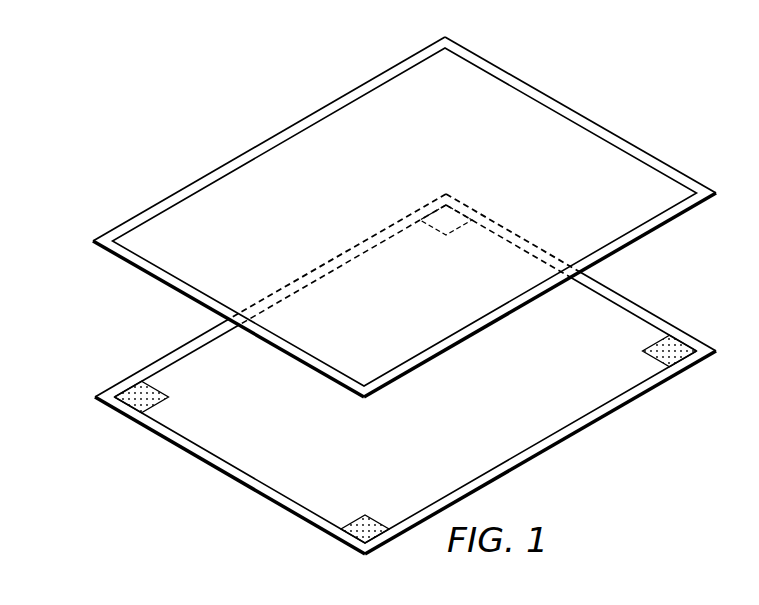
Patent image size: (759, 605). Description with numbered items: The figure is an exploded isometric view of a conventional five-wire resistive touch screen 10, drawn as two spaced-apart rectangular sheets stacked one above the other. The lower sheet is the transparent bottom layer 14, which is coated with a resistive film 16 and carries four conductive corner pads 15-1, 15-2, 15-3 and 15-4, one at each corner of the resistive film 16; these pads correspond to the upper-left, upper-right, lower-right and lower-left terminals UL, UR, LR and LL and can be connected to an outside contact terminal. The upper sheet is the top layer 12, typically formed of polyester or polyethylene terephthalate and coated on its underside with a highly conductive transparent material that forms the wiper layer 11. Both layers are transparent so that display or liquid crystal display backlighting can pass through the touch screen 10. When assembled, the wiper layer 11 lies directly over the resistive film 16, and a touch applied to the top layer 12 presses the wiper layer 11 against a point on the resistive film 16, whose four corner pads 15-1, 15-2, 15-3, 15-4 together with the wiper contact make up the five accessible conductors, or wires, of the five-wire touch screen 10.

The 5-wire resistive touch screen 10 is at (388, 315).
The wiper layer 11 is at (595, 148).
The top layer 12 is at (404, 215).
The transparent bottom layer 14 is at (388, 367).
The resistive film 16 is at (612, 315).
The conductive corner pad 15-1 is at (132, 400).
The conductive corner pad 15-2 is at (455, 220).
The conductive corner pad 15-3 is at (675, 345).
The conductive corner pad 15-4 is at (358, 528).